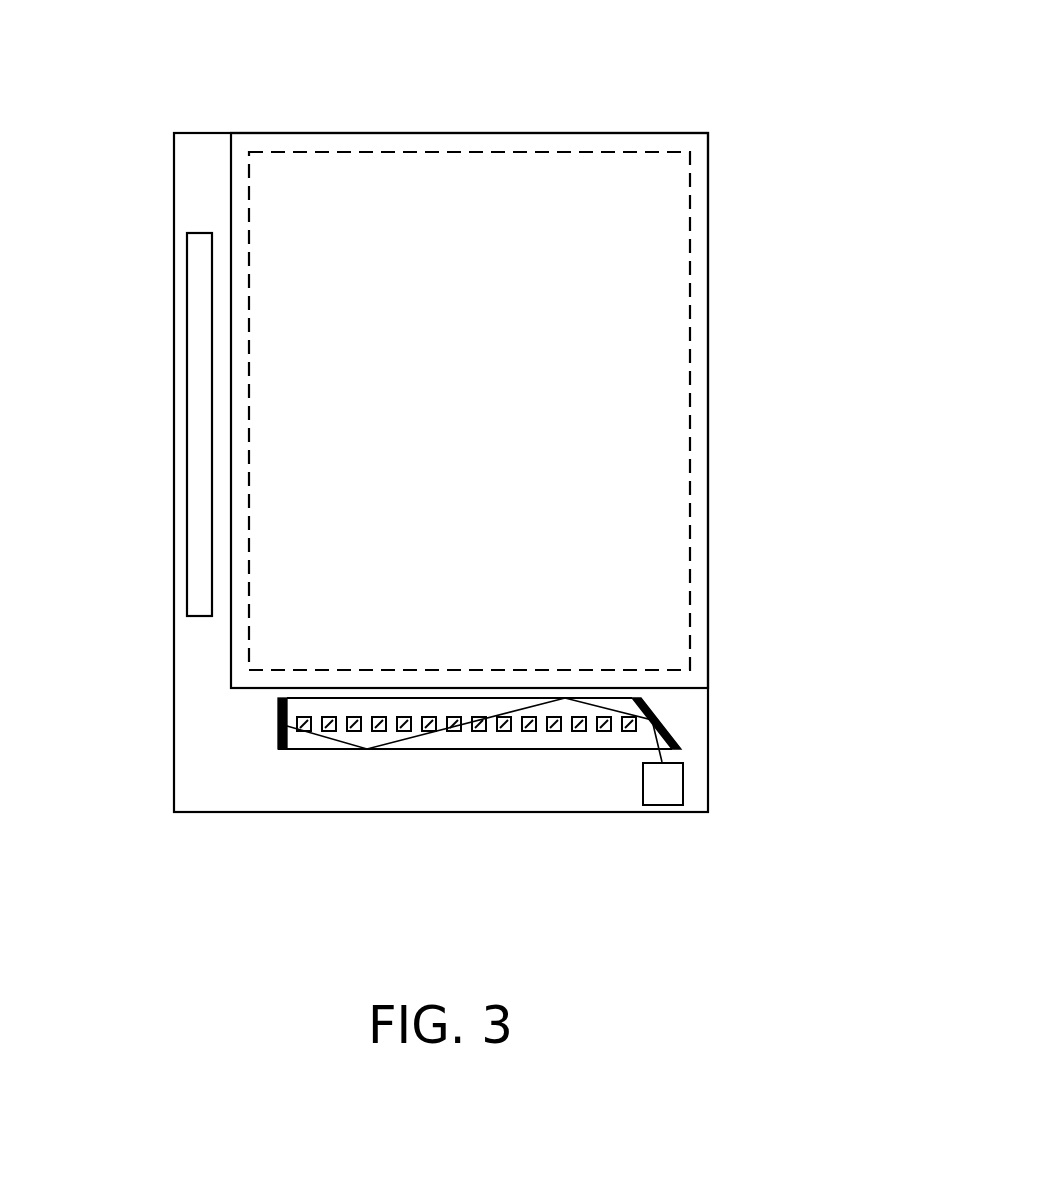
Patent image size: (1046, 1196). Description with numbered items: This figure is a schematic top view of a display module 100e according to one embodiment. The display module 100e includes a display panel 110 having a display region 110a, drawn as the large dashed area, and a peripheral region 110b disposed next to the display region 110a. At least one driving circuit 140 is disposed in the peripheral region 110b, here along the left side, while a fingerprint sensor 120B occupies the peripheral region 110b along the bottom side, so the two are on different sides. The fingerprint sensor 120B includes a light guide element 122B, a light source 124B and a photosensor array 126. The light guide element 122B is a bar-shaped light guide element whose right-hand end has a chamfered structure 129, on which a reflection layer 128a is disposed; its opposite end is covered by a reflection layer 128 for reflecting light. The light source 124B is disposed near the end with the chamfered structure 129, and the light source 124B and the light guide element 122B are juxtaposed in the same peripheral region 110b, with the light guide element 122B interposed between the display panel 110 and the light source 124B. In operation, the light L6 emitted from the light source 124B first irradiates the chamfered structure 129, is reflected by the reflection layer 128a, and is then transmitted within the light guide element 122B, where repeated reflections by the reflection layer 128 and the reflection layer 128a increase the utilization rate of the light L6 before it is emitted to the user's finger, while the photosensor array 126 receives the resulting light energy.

The display module 100e is at (724, 104).
The display panel 110 is at (645, 385).
The display region 110a is at (688, 287).
The peripheral region 110b is at (203, 188).
The driving circuit 140 is at (203, 420).
The fingerprint sensor 120B is at (737, 893).
The light guide element 122B is at (598, 742).
The light source 124B is at (662, 795).
The photosensor array 126 is at (558, 731).
The reflection layer 128 is at (279, 749).
The reflection layer 128a is at (663, 731).
The chamfered structure 129 is at (639, 703).
The light L6 is at (474, 731).